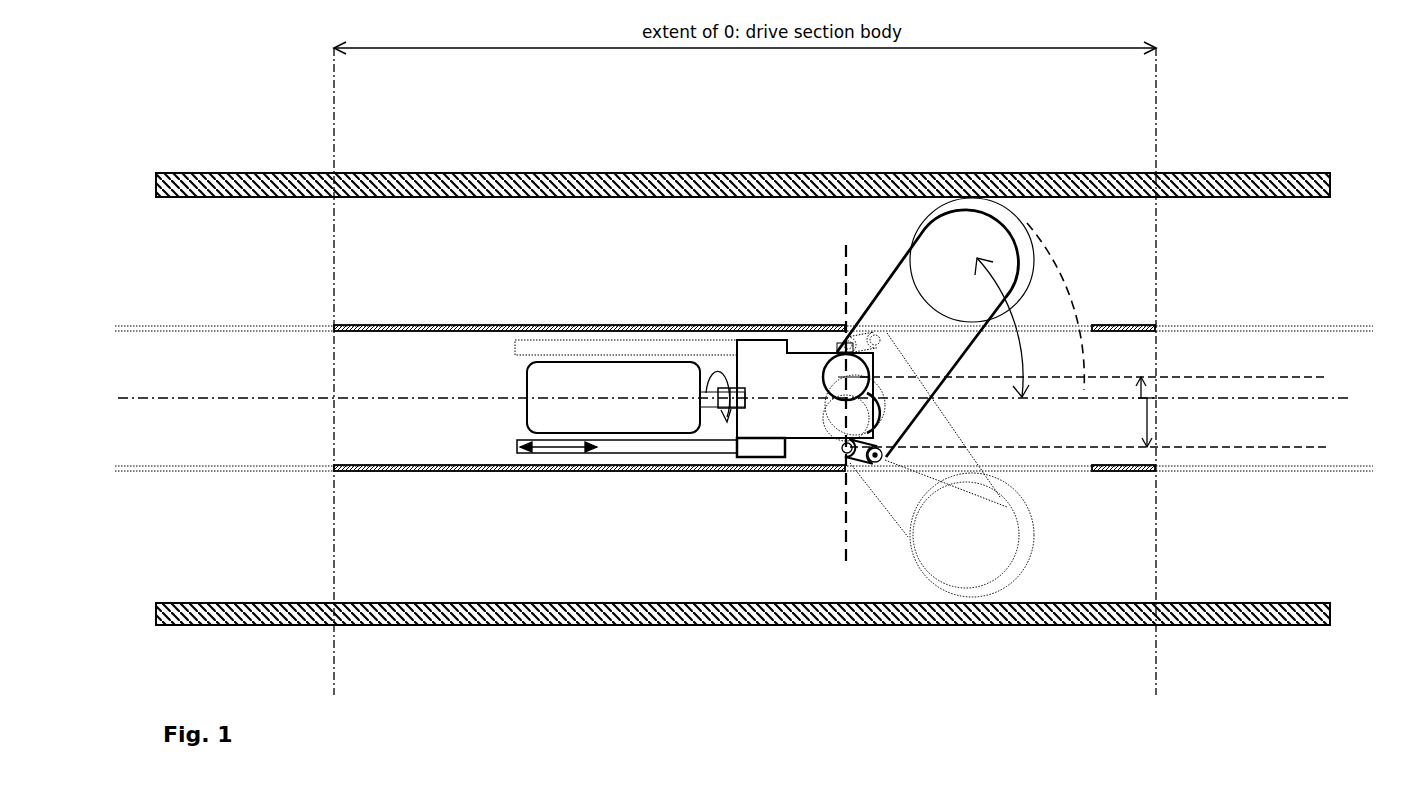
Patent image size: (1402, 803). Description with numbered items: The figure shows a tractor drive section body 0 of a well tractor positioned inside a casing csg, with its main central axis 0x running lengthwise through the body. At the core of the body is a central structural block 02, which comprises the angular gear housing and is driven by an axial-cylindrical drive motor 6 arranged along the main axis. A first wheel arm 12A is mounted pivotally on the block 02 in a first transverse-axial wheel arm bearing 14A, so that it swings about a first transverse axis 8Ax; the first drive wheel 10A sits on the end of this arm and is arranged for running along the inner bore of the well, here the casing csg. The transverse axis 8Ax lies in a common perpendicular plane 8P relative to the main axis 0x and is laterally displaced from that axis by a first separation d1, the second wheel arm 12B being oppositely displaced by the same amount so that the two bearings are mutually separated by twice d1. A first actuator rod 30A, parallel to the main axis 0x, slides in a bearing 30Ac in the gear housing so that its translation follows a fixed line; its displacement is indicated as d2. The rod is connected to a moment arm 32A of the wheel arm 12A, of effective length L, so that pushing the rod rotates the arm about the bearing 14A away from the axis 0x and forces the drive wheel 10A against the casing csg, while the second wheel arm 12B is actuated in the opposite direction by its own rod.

The casing csg is at (732, 356).
The drive section body 0 is at (744, 333).
The main central axis 0x is at (721, 330).
The central structural block 02 is at (694, 352).
The drive motor 6 is at (586, 362).
The first transverse axis 8Ax is at (967, 335).
The common perpendicular plane 8P is at (771, 423).
The first drive wheel 10A is at (962, 249).
The first wheel arm 12A is at (836, 285).
The first transverse-axial wheel arm bearing 14A is at (801, 327).
The first actuator rod 30A is at (922, 474).
The bearing 30Ac is at (724, 473).
The lever length L is at (807, 485).
The moment arm 32A is at (946, 423).
The second wheel arm 12B is at (1042, 465).
The first separation d1 is at (1211, 389).
The displacement of rod 30A d2 is at (1218, 422).